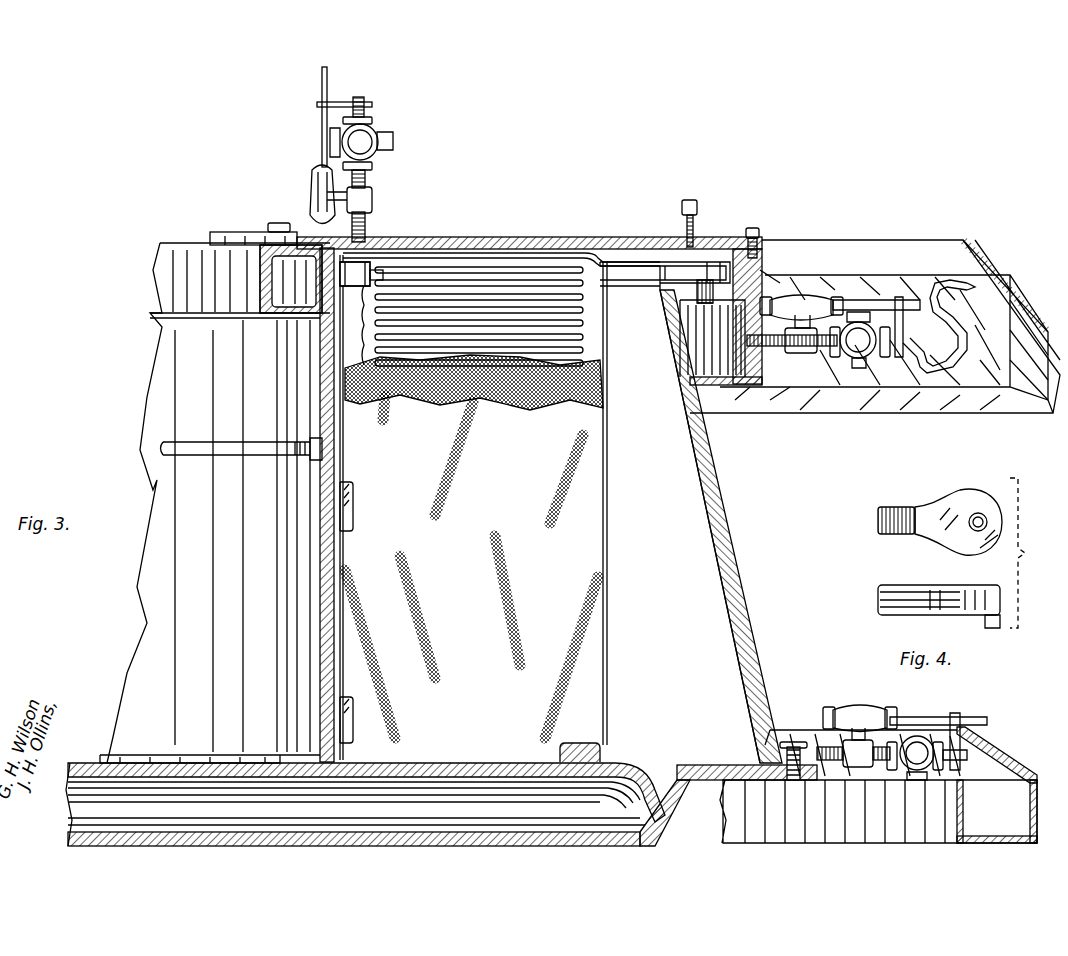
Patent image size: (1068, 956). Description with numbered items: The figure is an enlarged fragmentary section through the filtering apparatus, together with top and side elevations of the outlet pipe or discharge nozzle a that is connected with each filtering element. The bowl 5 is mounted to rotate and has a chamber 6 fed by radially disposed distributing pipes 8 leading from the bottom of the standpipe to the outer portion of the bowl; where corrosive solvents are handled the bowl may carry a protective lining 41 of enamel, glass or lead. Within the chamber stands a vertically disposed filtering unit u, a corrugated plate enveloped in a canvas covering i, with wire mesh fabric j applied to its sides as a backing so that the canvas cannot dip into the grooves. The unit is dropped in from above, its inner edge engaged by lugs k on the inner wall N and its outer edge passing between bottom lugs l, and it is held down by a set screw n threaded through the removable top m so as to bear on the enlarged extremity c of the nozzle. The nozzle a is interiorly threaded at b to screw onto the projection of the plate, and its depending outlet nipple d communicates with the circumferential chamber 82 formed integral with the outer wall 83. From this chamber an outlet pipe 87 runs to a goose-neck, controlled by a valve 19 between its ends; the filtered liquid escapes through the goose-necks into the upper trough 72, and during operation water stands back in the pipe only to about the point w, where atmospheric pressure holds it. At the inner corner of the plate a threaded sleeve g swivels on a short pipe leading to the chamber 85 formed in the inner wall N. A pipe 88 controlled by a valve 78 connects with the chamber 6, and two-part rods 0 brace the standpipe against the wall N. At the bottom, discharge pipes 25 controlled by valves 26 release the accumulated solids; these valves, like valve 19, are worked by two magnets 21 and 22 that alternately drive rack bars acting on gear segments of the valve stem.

In FIG. 3, the valve 78 is at (373, 126).
In FIG. 3, the pipe 88 is at (373, 180).
In FIG. 3, the magnet 22 is at (320, 192).
In FIG. 3, the chamber 85 is at (275, 263).
In FIG. 3, the interiorly threaded sleeve g is at (360, 258).
In FIG. 3, the removable top m is at (515, 235).
In FIG. 3, the enlarged outer extremity of discharge nozzle c is at (690, 268).
In FIG. 4, the enlarged outer extremity of discharge nozzle c is at (975, 495).
In FIG. 3, the set screw n is at (697, 207).
In FIG. 3, the circumferential chamber 82 is at (770, 290).
In FIG. 3, the magnet 21 is at (808, 297).
In FIG. 3, the upper trough 72 is at (876, 326).
In FIG. 3, the discharge pipe or nozzle a is at (700, 272).
In FIG. 4, the discharge pipe or nozzle a is at (940, 508).
In FIG. 3, the depending outlet nipple d is at (730, 310).
In FIG. 4, the depending outlet nipple d is at (975, 535).
In FIG. 3, the wire mesh fabric j is at (607, 393).
In FIG. 3, the outlet pipe 87 is at (780, 347).
In FIG. 3, the point in outlet pipe w is at (792, 403).
In FIG. 3, the valve 19 is at (857, 357).
In FIG. 3, the two-part rod 0 is at (207, 457).
In FIG. 3, the lug k is at (350, 512).
In FIG. 3, the filtering unit u is at (614, 503).
In FIG. 3, the canvas bag or covering i is at (471, 567).
In FIG. 3, the lining 41 is at (707, 525).
In FIG. 3, the outer wall 83 is at (733, 558).
In FIG. 3, the bowl 5 is at (766, 600).
In FIG. 3, the chamber 6 is at (686, 639).
In FIG. 3, the inner wall N is at (323, 590).
In FIG. 3, the bottom lug l is at (590, 747).
In FIG. 3, the distributing pipe 8 is at (378, 804).
In FIG. 3, the discharge pipe 25 is at (825, 743).
In FIG. 3, the valve 26 is at (927, 740).
In FIG. 4, the interior thread of nozzle b is at (877, 518).